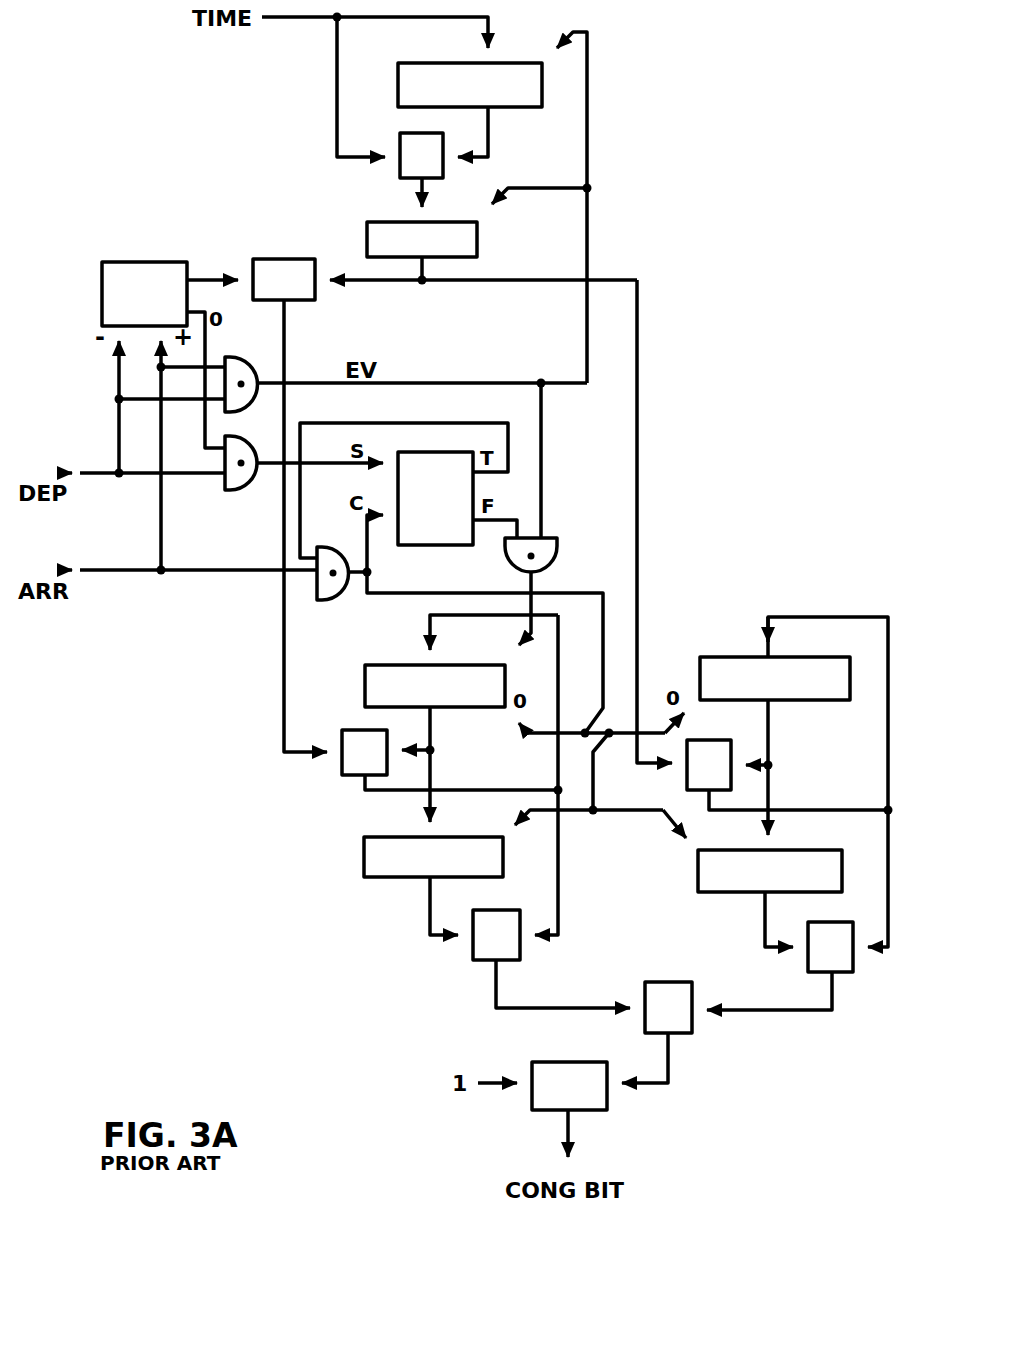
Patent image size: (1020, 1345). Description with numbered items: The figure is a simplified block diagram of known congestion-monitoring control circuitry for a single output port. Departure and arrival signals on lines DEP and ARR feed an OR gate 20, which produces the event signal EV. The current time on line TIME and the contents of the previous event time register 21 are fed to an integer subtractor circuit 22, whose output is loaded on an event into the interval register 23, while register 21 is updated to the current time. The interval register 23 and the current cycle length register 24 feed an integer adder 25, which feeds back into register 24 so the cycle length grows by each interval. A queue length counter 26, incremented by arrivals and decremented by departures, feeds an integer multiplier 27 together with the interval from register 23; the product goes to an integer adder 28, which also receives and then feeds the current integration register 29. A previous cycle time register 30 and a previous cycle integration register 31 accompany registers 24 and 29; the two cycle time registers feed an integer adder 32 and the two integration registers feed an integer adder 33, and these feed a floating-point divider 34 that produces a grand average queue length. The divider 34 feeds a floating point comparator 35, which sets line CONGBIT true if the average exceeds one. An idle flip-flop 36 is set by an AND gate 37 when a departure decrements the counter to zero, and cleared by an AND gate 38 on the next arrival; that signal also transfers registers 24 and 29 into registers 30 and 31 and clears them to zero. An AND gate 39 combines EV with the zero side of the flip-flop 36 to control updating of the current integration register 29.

The OR gate 20 is at (248, 357).
The previous event time register 21 is at (513, 107).
The integer subtractor circuit 22 is at (402, 134).
The interval register 23 is at (477, 238).
The current cycle length register 24 is at (815, 700).
The integer adder 25 is at (711, 740).
The queue length counter 26 is at (122, 262).
The integer multiplier 27 is at (282, 259).
The integer adder 28 is at (350, 730).
The current integration register 29 is at (477, 707).
The previous cycle time register 30 is at (730, 892).
The previous cycle integration register 31 is at (364, 857).
The integer adder 32 is at (808, 962).
The integer adder 33 is at (515, 960).
The floating-point divider 34 is at (680, 1033).
The floating point comparator 35 is at (590, 1110).
The idle flip-flop 36 is at (440, 545).
The AND gate 37 is at (248, 490).
The AND gate 38 is at (335, 600).
The AND gate 39 is at (557, 548).